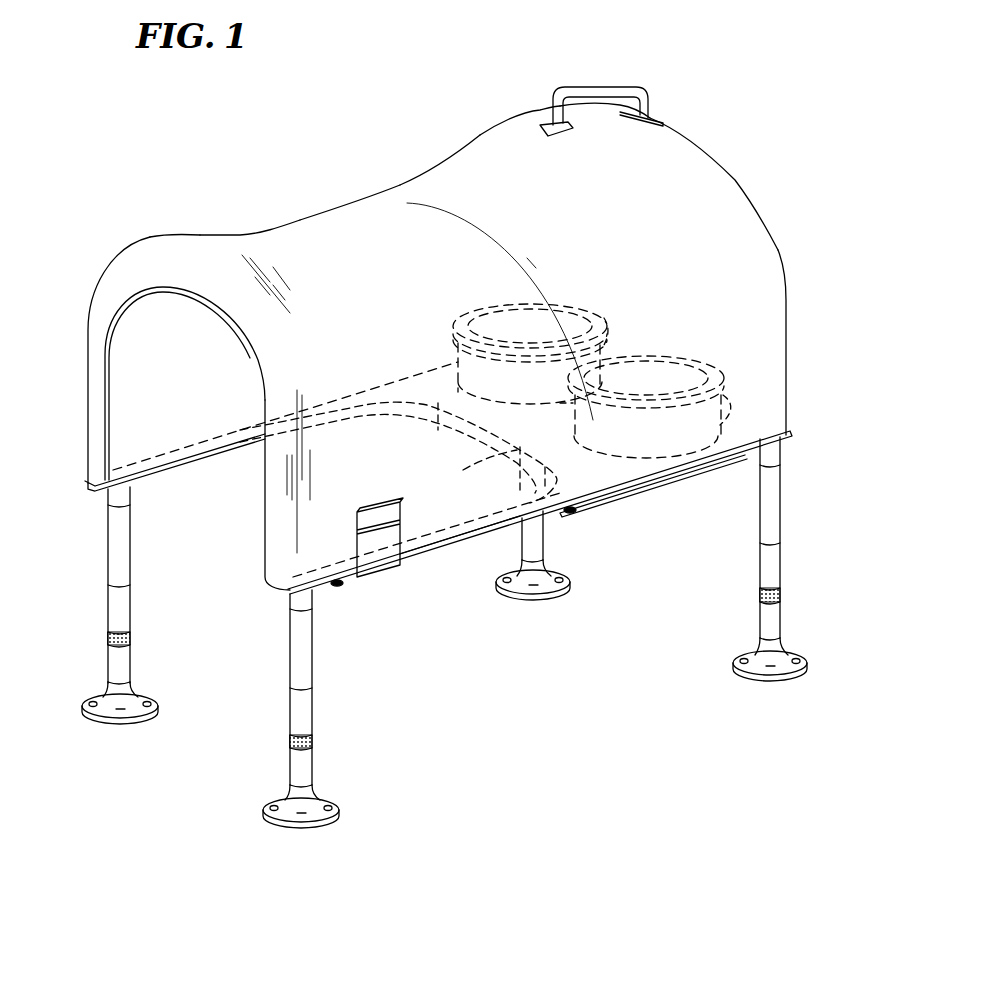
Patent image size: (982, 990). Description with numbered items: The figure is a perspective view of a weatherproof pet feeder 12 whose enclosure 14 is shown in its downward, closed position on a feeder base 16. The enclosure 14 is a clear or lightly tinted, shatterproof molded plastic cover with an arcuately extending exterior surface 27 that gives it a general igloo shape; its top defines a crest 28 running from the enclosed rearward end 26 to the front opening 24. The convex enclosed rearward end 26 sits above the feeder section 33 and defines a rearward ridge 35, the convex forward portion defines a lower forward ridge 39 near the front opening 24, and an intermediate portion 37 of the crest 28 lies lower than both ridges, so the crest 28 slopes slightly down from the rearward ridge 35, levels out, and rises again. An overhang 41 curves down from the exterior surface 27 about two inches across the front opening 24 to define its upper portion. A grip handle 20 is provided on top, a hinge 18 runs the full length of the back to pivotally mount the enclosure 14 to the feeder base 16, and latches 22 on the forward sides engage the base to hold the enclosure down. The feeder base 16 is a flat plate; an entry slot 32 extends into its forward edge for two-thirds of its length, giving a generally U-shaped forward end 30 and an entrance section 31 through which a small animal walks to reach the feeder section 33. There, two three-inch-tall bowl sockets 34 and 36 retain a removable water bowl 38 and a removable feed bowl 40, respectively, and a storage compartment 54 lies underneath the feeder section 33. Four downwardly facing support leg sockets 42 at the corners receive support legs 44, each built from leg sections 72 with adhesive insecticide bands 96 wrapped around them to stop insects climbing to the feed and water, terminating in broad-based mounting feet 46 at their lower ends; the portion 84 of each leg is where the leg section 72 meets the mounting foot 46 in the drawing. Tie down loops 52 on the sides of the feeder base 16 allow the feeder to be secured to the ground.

The weatherproof pet feeder 12 is at (289, 200).
The enclosure 14 is at (738, 222).
The feeder base 16 is at (445, 560).
The hinge 18 is at (757, 413).
The grip handle 20 is at (590, 86).
The latches 22 is at (385, 565).
The front opening 24 is at (130, 350).
The enclosed rearward end 26 is at (712, 152).
The exterior surface 27 is at (238, 234).
The crest 28 is at (425, 177).
The U-shaped forward end 30 is at (478, 540).
The entrance section 31 is at (262, 490).
The entry slot 32 is at (183, 470).
The feeder section 33 is at (437, 423).
The bowl socket 34 is at (455, 362).
The rearward ridge 35 is at (517, 117).
The bowl socket 36 is at (657, 440).
The intermediate portion 37 is at (360, 200).
The water bowl 38 is at (513, 323).
The forward ridge 39 is at (165, 238).
The feed bowl 40 is at (675, 363).
The overhang 41 is at (118, 280).
The support leg sockets 42 is at (108, 505).
The support legs 44 is at (140, 604).
The mounting feet 46 is at (125, 720).
The tie down loops 52 is at (340, 586).
The storage compartment 54 is at (465, 470).
The leg sections 72 is at (118, 506).
The leg base taper 84 is at (108, 678).
The insecticide bands 96 is at (112, 638).